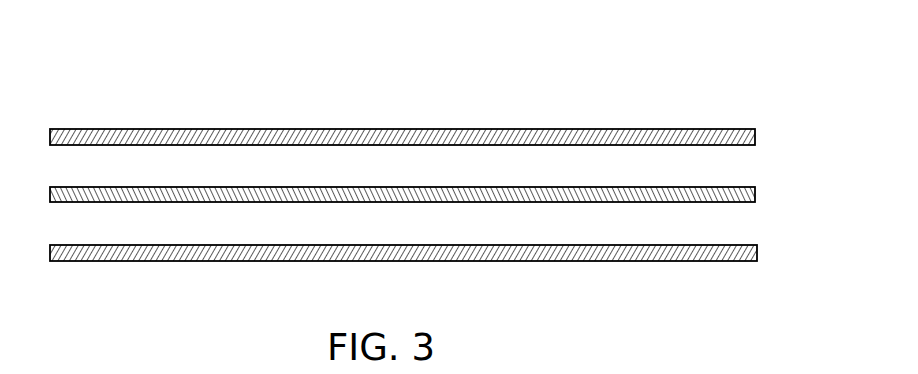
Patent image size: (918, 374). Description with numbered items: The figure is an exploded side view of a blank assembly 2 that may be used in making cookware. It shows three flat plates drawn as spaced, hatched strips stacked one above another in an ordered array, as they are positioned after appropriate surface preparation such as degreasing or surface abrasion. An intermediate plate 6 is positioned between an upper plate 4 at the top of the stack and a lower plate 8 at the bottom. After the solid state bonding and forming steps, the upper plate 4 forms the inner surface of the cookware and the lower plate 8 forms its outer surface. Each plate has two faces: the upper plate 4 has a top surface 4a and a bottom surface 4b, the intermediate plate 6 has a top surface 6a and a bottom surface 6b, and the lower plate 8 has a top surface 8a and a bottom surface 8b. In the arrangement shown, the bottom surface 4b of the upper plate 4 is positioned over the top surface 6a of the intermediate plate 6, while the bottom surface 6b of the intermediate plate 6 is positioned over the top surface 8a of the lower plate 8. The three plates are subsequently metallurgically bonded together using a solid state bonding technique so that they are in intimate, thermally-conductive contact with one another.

The blank assembly 2 is at (772, 40).
The upper plate 4 is at (742, 129).
The top surface of the upper plate 4a is at (78, 145).
The bottom surface of the upper plate 4b is at (155, 145).
The intermediate plate 6 is at (740, 187).
The top surface of the intermediate plate 6a is at (413, 187).
The bottom surface of the intermediate plate 6b is at (492, 200).
The lower plate 8 is at (725, 261).
The top surface of the lower plate 8a is at (93, 247).
The bottom surface of the lower plate 8b is at (175, 261).